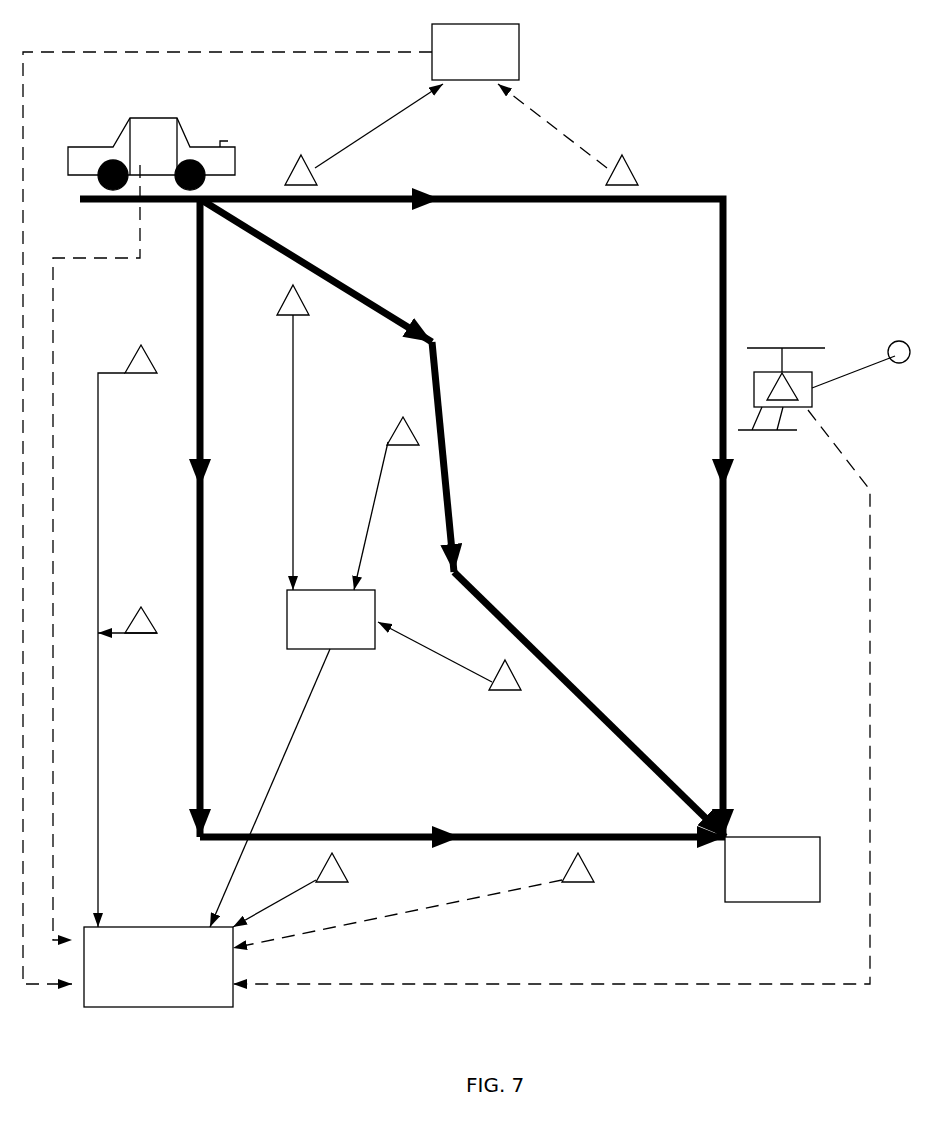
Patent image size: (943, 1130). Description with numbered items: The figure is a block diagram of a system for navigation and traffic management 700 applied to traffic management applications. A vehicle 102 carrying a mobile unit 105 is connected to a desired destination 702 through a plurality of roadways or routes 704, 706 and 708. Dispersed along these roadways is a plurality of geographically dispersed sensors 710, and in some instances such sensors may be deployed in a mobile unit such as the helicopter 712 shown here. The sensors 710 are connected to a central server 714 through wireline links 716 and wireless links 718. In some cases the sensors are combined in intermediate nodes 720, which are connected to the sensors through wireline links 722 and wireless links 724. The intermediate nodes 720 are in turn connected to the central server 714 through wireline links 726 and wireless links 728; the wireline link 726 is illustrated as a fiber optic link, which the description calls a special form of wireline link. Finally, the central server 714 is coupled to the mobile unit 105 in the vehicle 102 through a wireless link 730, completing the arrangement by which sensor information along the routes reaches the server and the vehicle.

The system for navigation and traffic management 700 is at (729, 118).
The desired destination 702 is at (790, 904).
The roadway 704 is at (545, 208).
The roadway 706 is at (440, 386).
The roadway 708 is at (390, 832).
The geographically dispersed sensor 710 is at (320, 185).
The helicopter 712 is at (782, 346).
The central server 714 is at (135, 1008).
The wireline link 716 is at (104, 840).
The wireless link 718 is at (868, 786).
The intermediate node 720 is at (520, 52).
The wireline link 722 is at (372, 124).
The wireless link 724 is at (560, 124).
The wireline link 726 is at (262, 790).
The wireless link 728 is at (198, 48).
The wireless link 730 is at (127, 262).
The vehicle 102 is at (66, 152).
The mobile unit 105 is at (170, 140).